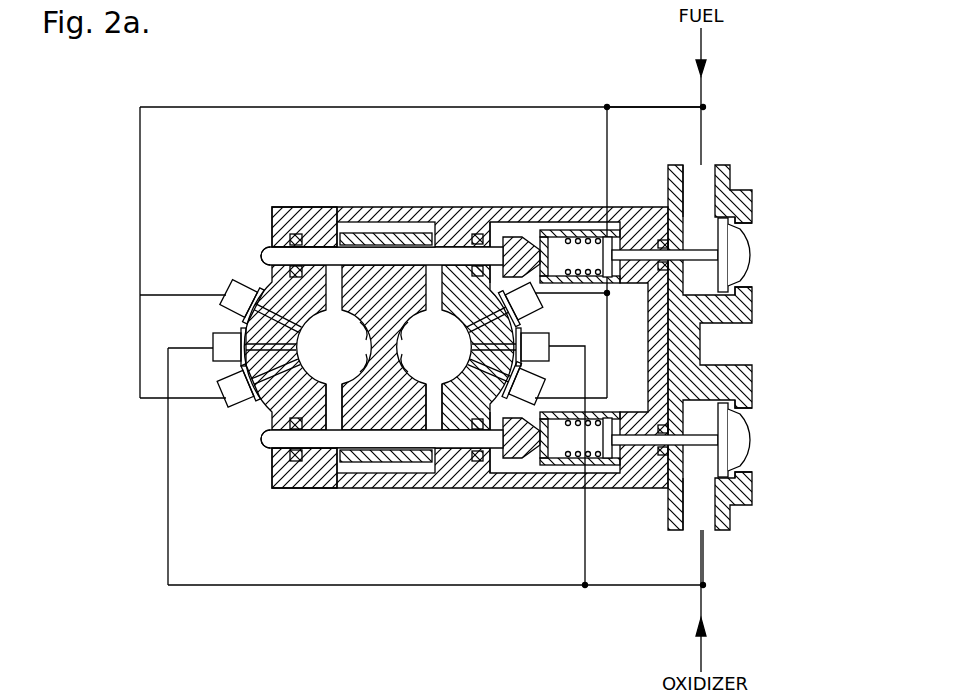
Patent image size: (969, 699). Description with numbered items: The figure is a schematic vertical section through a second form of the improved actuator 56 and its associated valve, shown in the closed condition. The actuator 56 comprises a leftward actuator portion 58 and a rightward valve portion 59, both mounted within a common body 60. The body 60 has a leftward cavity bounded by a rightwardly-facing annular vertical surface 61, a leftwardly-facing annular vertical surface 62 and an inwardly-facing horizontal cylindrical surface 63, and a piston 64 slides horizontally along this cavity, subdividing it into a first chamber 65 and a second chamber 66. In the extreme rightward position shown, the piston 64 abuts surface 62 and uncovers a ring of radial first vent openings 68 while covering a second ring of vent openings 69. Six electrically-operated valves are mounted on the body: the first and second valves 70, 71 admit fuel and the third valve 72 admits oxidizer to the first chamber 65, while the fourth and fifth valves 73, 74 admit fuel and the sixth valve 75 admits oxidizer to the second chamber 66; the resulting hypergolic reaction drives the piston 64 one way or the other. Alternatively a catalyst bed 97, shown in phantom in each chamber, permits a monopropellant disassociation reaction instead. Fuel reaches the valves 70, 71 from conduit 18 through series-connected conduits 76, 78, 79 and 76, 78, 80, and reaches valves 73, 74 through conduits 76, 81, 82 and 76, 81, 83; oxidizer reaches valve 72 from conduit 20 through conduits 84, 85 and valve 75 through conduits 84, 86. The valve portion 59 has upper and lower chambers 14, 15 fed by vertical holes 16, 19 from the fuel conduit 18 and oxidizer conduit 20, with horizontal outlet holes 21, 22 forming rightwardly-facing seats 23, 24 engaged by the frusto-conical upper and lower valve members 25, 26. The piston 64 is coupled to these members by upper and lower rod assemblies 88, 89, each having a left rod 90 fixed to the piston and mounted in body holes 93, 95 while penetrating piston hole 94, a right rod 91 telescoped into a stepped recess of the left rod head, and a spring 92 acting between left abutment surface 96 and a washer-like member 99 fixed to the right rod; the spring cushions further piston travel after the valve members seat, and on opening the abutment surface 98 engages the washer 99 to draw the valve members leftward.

The upper chamber 14 is at (690, 241).
The lower chamber 15 is at (690, 471).
The vertical hole 16 is at (712, 170).
The conduit 18 is at (703, 120).
The vertical hole 19 is at (716, 530).
The conduit 20 is at (703, 568).
The horizontal hole 21 is at (745, 228).
The horizontal hole 22 is at (745, 408).
The seat 23 is at (745, 285).
The seat 24 is at (745, 452).
The upper valve member 25 is at (735, 255).
The lower valve member 26 is at (735, 438).
The actuator 56 is at (436, 72).
The actuator portion 58 is at (287, 195).
The valve portion 59 is at (770, 185).
The body 60 is at (468, 207).
The rightwardly-facing annular vertical surface 61 is at (343, 414).
The leftwardly-facing annular vertical surface 62 is at (428, 414).
The inwardly-facing horizontal cylindrical surface 63 is at (366, 230).
The piston 64 is at (373, 299).
The first chamber 65 is at (320, 333).
The second chamber 66 is at (423, 333).
The first vent openings 68 is at (347, 207).
The second vent openings 69 is at (414, 215).
The first valve 70 is at (230, 290).
The second valve 71 is at (235, 405).
The third valve 72 is at (222, 360).
The fourth valve 73 is at (532, 312).
The fifth valve 74 is at (535, 386).
The sixth valve 75 is at (549, 350).
The conduit 76 is at (670, 107).
The conduit 78 is at (358, 107).
The conduit 79 is at (180, 295).
The conduit 80 is at (140, 353).
The conduit 81 is at (608, 125).
The conduit 82 is at (607, 295).
The conduit 83 is at (607, 360).
The conduit 84 is at (605, 585).
The conduit 85 is at (308, 585).
The conduit 86 is at (585, 540).
The upper rod assembly 88 is at (508, 230).
The lower rod assembly 89 is at (504, 462).
The left rod 90 is at (448, 230).
The right rod 91 is at (645, 248).
The spring 92 is at (588, 232).
The leftward horizontal hole 93 is at (268, 252).
The horizontal hole 94 is at (368, 247).
The horizontal hole 95 is at (476, 240).
The left annular vertical abutment surface 96 is at (572, 237).
The catalyst bed 97 is at (352, 347).
The right annular vertical abutment surface 98 is at (609, 237).
The washer-like member 99 is at (610, 258).